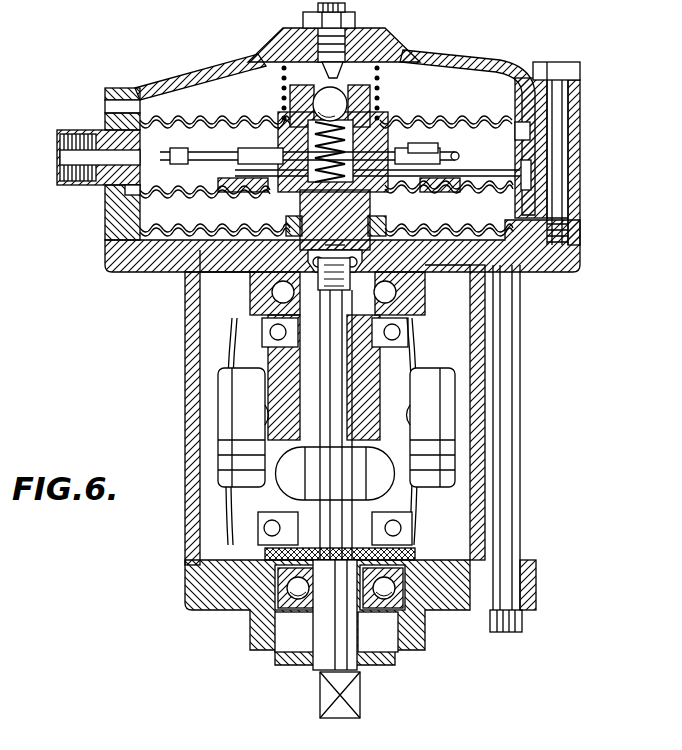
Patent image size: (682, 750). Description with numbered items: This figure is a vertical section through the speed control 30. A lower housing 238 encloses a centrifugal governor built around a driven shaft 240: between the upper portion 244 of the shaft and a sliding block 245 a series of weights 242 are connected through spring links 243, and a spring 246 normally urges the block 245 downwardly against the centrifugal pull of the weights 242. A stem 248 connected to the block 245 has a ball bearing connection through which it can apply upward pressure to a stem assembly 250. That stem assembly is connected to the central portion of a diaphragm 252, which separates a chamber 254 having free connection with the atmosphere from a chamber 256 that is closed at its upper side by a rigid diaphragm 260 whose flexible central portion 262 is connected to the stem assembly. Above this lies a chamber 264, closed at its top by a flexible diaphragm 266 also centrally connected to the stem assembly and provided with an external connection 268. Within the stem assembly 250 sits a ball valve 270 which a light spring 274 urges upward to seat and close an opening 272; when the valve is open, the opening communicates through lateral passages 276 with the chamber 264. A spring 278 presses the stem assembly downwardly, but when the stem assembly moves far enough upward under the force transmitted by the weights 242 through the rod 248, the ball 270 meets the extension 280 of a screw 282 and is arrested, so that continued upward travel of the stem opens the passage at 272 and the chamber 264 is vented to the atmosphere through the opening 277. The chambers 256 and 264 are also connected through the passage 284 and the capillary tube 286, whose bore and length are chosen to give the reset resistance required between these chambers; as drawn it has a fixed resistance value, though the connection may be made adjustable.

The speed control 30 is at (584, 296).
The lower housing 238 is at (190, 348).
The driven shaft 240 is at (345, 642).
The weights 242 is at (240, 400).
The spring links 243 is at (414, 500).
The upper portion 244 is at (372, 372).
The sliding block 245 is at (225, 606).
The spring 246 is at (282, 478).
The stem 248 is at (355, 268).
The stem assembly 250 is at (368, 206).
The diaphragm 252 is at (178, 258).
The chamber 254 is at (165, 240).
The chamber 256 is at (165, 208).
The rigid diaphragm 260 is at (448, 192).
The flexible central portion 262 is at (268, 192).
The chamber 264 is at (548, 142).
The flexible diaphragm 266 is at (470, 112).
The external connection 268 is at (65, 152).
The ball valve 270 is at (365, 96).
The opening 272 is at (262, 62).
The light spring 274 is at (352, 128).
The lateral passages 276 is at (262, 146).
The opening 277 is at (110, 106).
The spring 278 is at (280, 94).
The extension 280 is at (360, 32).
The screw 282 is at (318, 40).
The passage 284 is at (552, 192).
The capillary tube 286 is at (510, 148).